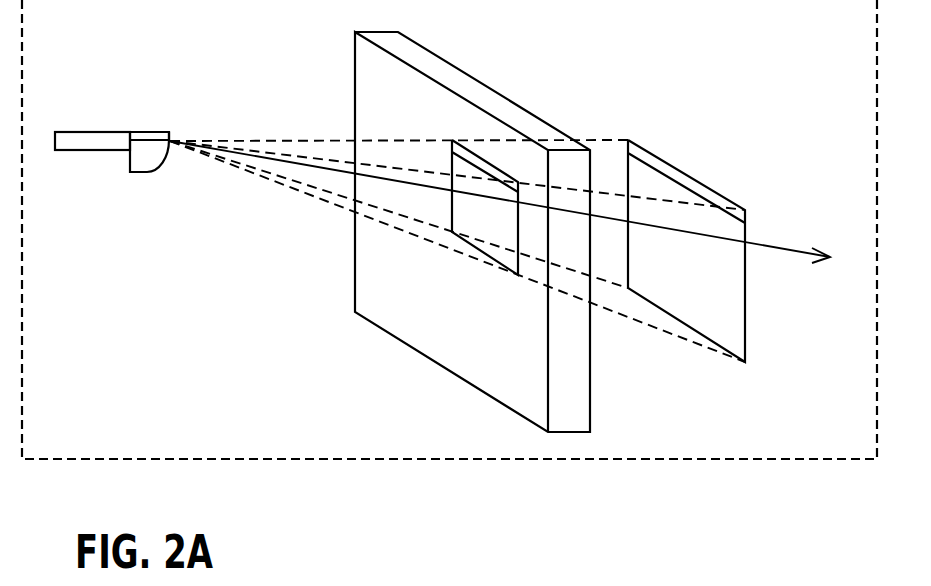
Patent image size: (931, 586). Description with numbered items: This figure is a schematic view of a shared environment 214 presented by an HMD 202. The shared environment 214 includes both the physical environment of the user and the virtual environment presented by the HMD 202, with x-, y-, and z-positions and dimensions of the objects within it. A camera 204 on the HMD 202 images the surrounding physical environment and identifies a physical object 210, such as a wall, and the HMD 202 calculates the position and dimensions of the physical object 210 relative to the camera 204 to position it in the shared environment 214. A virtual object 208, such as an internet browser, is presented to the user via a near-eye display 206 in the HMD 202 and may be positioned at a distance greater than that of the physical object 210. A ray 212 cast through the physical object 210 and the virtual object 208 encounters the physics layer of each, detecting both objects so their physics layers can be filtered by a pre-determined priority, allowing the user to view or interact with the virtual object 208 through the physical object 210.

The HMD 202 is at (147, 131).
The camera 204 is at (169, 139).
The near-eye display 206 is at (168, 153).
The virtual object 208 is at (687, 173).
The physical object 210 is at (473, 75).
The ray 212 is at (772, 242).
The shared environment 214 is at (697, 423).